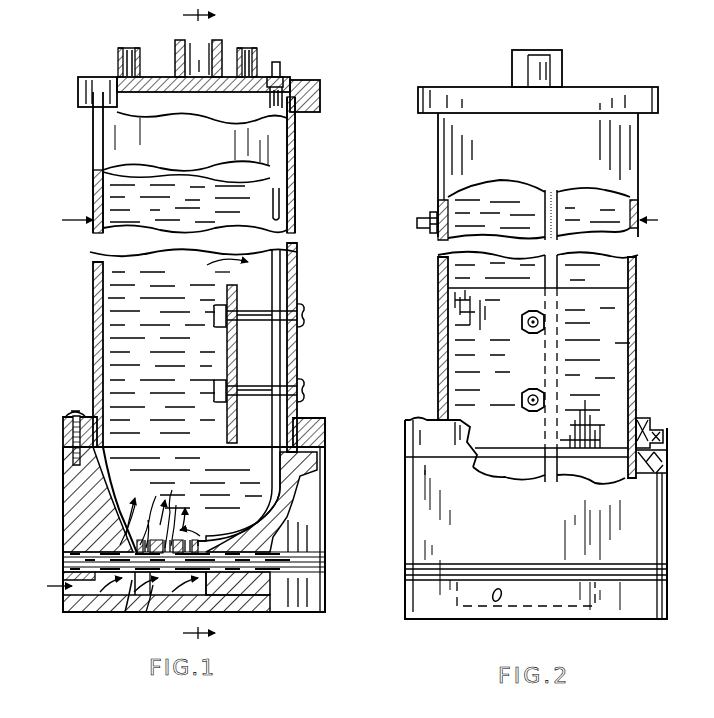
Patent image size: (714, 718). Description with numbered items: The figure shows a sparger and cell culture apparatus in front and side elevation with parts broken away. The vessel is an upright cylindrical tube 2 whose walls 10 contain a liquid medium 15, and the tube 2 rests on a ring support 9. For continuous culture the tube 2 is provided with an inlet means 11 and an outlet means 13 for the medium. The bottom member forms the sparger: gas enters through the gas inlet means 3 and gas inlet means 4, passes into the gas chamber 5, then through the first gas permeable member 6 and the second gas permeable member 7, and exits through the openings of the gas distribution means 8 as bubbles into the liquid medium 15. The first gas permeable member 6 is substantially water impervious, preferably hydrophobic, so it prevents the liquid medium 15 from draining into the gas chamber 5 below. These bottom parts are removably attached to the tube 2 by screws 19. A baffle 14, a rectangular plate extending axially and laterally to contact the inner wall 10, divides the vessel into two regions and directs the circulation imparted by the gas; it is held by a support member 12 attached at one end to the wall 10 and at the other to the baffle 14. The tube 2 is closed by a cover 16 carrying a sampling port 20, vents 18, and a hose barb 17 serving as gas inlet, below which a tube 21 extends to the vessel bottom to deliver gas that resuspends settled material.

In FIG. 1, the cylindrical tube 2 is at (130, 323).
In FIG. 2, the cylindrical tube 2 is at (655, 219).
In FIG. 1, the gas inlet means 3 is at (62, 592).
In FIG. 2, the gas inlet means 3 is at (493, 600).
In FIG. 1, the gas inlet means 4 is at (40, 560).
In FIG. 2, the gas inlet means 4 is at (418, 613).
In FIG. 1, the gas chamber 5 is at (105, 608).
In FIG. 1, the first gas permeable member 6 is at (150, 608).
In FIG. 1, the second gas permeable member 7 is at (130, 610).
In FIG. 1, the gas distribution means 8 is at (325, 493).
In FIG. 2, the gas distribution means 8 is at (415, 491).
In FIG. 1, the ring support 9 is at (311, 426).
In FIG. 2, the ring support 9 is at (412, 431).
In FIG. 1, the walls 10 is at (298, 367).
In FIG. 2, the inlet means 11 is at (417, 221).
In FIG. 1, the support member 12 is at (250, 385).
In FIG. 2, the support member 12 is at (522, 391).
In FIG. 2, the outlet means 13 is at (648, 416).
In FIG. 1, the baffle 14 is at (227, 290).
In FIG. 2, the baffle 14 is at (610, 349).
In FIG. 1, the liquid medium 15 is at (93, 198).
In FIG. 2, the liquid medium 15 is at (538, 176).
In FIG. 1, the cover 16 is at (320, 96).
In FIG. 2, the cover 16 is at (538, 100).
In FIG. 1, the hose barb 17 is at (282, 62).
In FIG. 1, the vents 18 is at (118, 56).
In FIG. 2, the vents 18 is at (545, 71).
In FIG. 1, the screws 19 is at (70, 408).
In FIG. 1, the sampling port 20 is at (222, 46).
In FIG. 2, the sampling port 20 is at (565, 54).
In FIG. 1, the tube 21 is at (272, 208).
In FIG. 2, the tube 21 is at (545, 219).